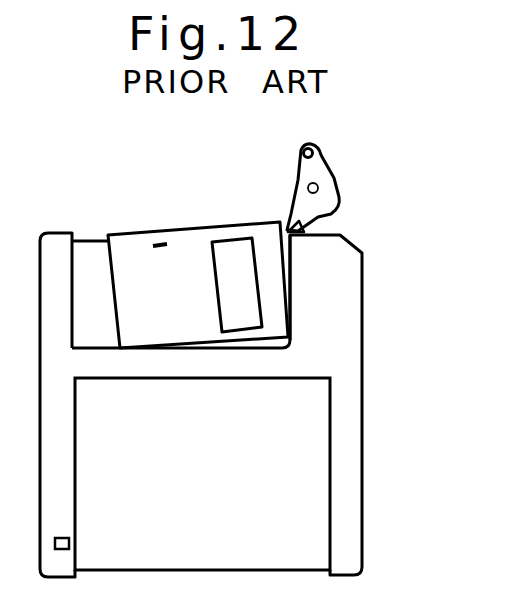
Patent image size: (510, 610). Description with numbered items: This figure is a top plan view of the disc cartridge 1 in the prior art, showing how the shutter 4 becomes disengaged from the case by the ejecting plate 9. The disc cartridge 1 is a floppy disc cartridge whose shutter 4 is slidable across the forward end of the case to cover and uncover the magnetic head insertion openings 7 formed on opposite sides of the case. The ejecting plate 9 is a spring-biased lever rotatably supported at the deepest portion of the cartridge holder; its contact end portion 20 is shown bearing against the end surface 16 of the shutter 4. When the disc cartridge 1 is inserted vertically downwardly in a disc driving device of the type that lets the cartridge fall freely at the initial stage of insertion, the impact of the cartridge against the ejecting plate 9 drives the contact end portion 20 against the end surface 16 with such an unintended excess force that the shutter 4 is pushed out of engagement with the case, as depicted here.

The disc cartridge 1 is at (362, 420).
The shutter 4 is at (128, 245).
The magnetic head insertion openings 7 is at (220, 248).
The ejecting plate 9 is at (327, 182).
The contact end portion 20 is at (288, 222).
The end surface 16 is at (285, 262).